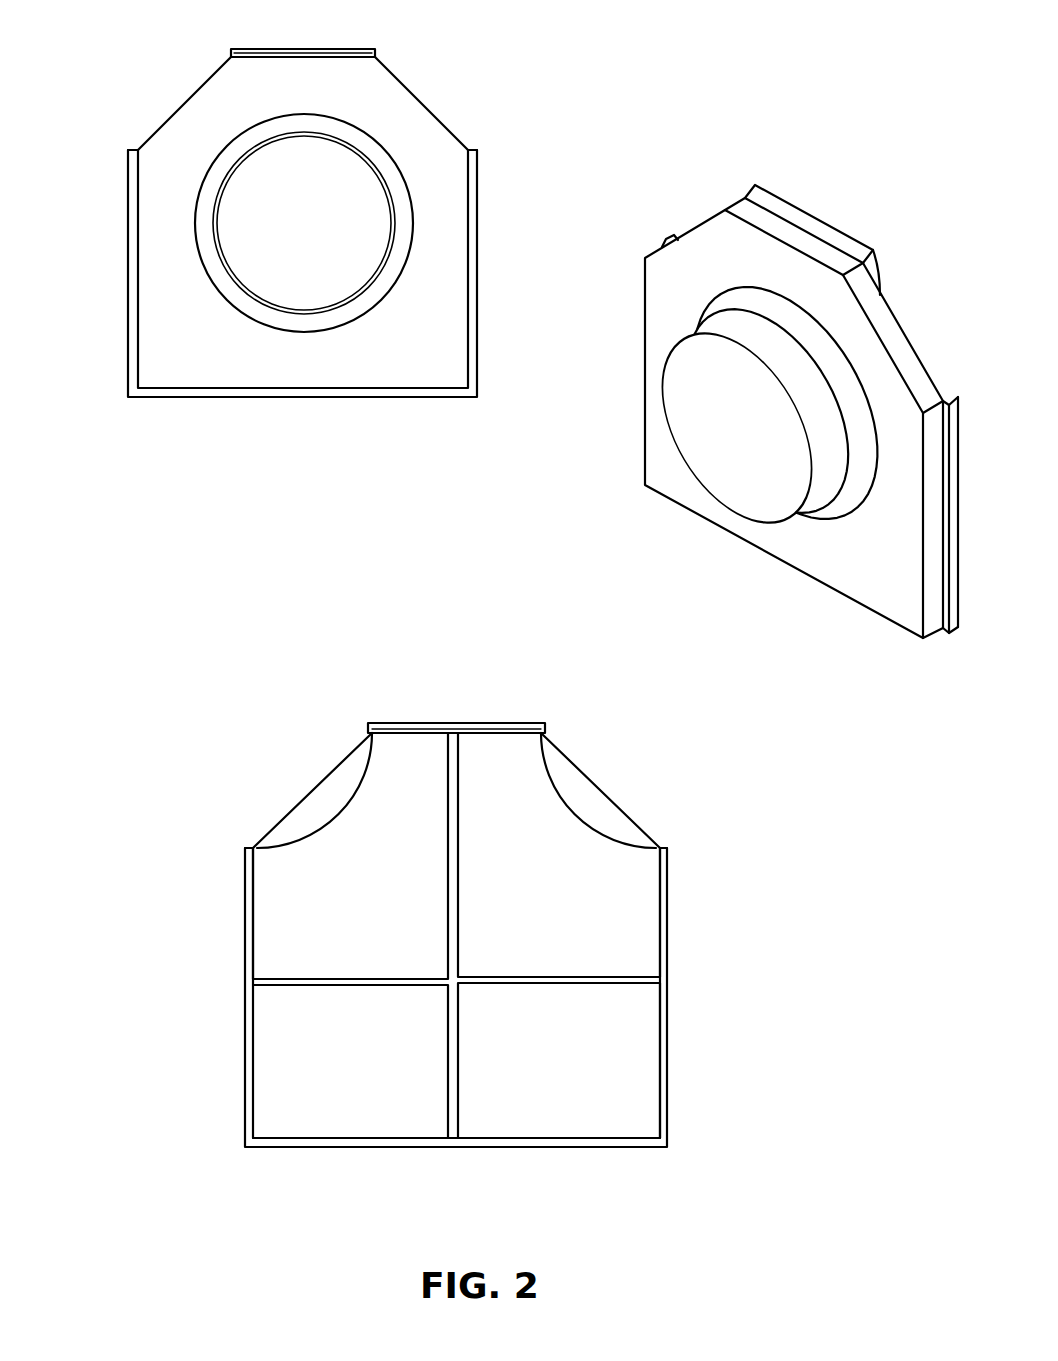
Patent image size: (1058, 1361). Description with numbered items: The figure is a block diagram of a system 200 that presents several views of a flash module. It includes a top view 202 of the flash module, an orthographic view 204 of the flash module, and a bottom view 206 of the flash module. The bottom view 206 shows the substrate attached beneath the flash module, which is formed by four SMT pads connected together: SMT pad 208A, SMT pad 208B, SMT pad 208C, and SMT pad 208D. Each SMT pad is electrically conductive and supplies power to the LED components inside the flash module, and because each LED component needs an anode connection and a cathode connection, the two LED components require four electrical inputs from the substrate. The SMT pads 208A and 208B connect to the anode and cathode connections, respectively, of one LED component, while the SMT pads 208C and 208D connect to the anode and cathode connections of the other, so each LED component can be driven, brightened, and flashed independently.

The system 200 is at (103, 58).
The top view 202 is at (478, 168).
The orthographic view 204 is at (643, 434).
The bottom view 206 is at (461, 957).
The SMT pad 208A is at (268, 873).
The SMT pad 208B is at (263, 1105).
The SMT pad 208C is at (625, 893).
The SMT pad 208D is at (647, 1093).